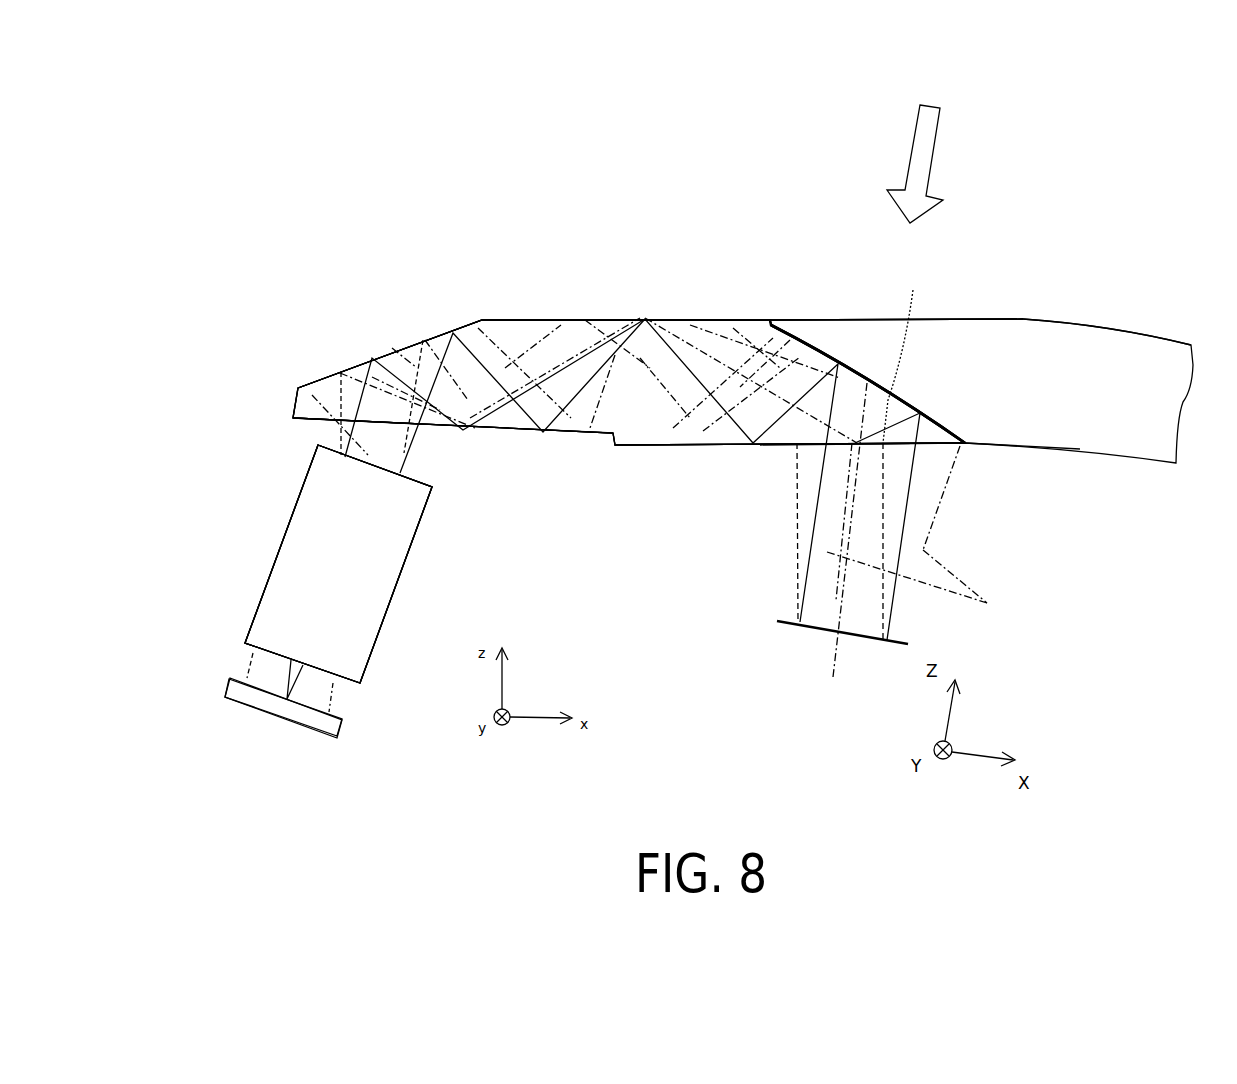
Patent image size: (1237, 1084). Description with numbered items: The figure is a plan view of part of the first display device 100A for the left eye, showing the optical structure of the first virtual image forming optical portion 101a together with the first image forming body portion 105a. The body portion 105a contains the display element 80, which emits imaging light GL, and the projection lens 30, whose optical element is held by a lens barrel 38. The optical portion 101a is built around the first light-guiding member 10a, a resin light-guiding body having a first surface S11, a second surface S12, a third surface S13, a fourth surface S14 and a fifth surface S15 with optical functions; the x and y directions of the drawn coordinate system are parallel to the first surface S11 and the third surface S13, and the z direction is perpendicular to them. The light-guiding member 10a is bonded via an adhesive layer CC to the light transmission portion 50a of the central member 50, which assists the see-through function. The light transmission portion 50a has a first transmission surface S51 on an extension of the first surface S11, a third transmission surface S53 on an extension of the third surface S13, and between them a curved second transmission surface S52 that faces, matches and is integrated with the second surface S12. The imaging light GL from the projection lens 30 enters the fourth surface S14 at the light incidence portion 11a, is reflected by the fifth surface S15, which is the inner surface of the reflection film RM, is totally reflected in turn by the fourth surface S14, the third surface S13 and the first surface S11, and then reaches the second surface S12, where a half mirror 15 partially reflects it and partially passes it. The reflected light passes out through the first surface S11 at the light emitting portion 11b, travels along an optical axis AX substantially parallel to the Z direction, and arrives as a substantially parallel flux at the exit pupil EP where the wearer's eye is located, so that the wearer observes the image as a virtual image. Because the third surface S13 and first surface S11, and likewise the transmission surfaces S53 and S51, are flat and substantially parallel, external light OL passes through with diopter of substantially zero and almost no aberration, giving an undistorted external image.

The first display device 100A is at (1236, 123).
The first light-guiding member 10a is at (603, 486).
The central member 50 is at (1077, 272).
The light transmission portion 50a is at (997, 330).
The third transmission surface S53 is at (960, 318).
The first transmission surface S51 is at (962, 445).
The second transmission surface S52 is at (812, 346).
The second surface S12 is at (858, 358).
The half mirror 15 is at (858, 358).
The third surface S13 is at (633, 318).
The first surface S11 is at (765, 445).
The fourth surface S14 is at (455, 437).
The fifth surface S15 is at (357, 360).
The reflection film RM is at (357, 360).
The light incidence portion 11a is at (378, 433).
The light emitting portion 11b is at (893, 455).
The first virtual image forming optical portion 101a is at (519, 288).
The first image forming body portion 105a is at (251, 545).
The projection lens 30 is at (400, 588).
The lens barrel 38 is at (400, 588).
The display element 80 is at (292, 736).
The external light OL is at (915, 150).
The exit pupil EP is at (855, 647).
The adhesive layer CC is at (905, 453).
The optical axis AX is at (820, 637).
The imaging light GL is at (410, 460).